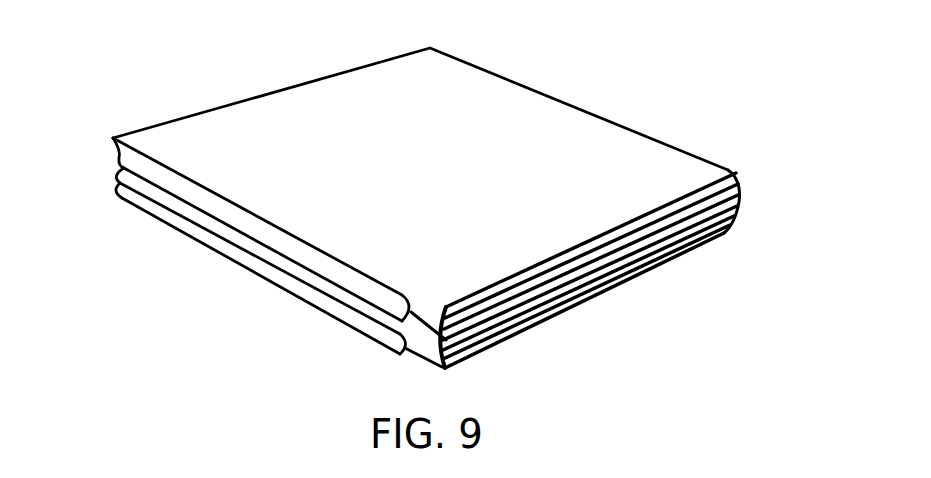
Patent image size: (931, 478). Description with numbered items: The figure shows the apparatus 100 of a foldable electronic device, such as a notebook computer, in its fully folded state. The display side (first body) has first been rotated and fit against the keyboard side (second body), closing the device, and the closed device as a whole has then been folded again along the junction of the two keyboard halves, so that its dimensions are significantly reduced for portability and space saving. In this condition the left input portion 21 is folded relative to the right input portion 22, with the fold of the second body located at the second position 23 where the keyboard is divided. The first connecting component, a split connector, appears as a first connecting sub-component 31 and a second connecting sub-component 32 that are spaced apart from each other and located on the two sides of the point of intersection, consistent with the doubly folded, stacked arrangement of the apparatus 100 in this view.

The apparatus 100 is at (124, 62).
The right input portion 22 is at (528, 107).
The second position 23 is at (738, 192).
The left input portion 21 is at (117, 173).
The second connecting sub-component 32 is at (273, 240).
The first connecting sub-component 31 is at (257, 267).